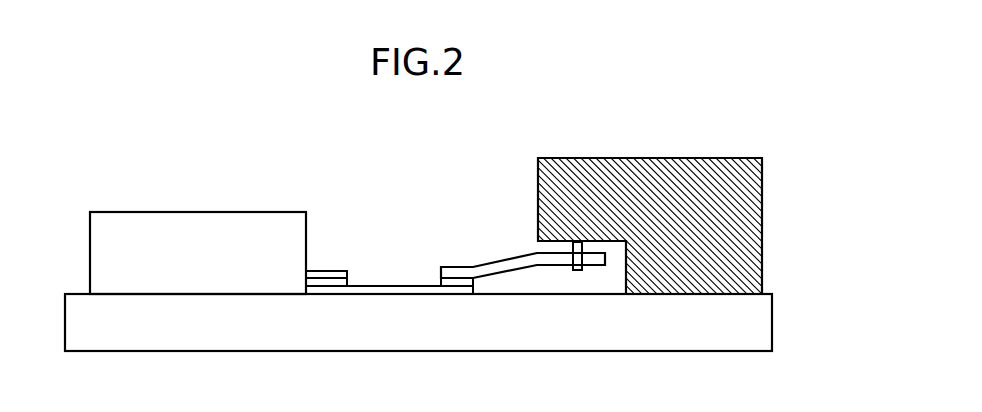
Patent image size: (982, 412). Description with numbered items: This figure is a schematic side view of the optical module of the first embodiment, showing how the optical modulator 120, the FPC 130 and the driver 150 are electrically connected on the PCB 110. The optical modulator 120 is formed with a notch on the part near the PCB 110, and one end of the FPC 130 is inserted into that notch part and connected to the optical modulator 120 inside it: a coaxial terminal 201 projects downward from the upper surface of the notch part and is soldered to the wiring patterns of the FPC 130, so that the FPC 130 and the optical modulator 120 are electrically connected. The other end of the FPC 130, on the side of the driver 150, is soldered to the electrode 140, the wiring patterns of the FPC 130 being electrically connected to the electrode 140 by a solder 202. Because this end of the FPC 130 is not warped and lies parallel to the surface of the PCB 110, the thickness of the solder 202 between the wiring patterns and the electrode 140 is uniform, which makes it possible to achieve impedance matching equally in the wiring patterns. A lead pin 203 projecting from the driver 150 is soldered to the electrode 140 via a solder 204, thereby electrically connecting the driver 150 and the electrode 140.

The PCB 110 is at (722, 351).
The optical modulator 120 is at (694, 158).
The FPC 130 is at (457, 267).
The electrode 140 is at (393, 286).
The driver 150 is at (238, 212).
The coaxial terminal 201 is at (575, 270).
The solder 202 is at (457, 283).
The lead pin 203 is at (336, 271).
The solder 204 is at (318, 284).